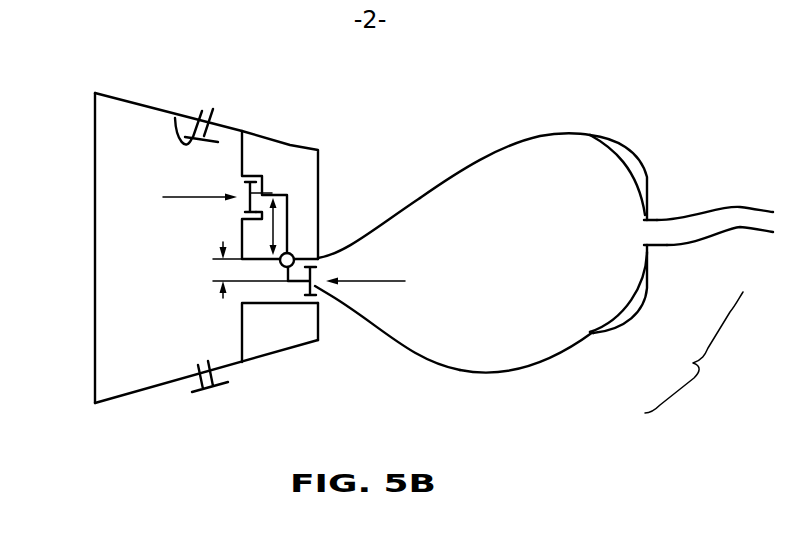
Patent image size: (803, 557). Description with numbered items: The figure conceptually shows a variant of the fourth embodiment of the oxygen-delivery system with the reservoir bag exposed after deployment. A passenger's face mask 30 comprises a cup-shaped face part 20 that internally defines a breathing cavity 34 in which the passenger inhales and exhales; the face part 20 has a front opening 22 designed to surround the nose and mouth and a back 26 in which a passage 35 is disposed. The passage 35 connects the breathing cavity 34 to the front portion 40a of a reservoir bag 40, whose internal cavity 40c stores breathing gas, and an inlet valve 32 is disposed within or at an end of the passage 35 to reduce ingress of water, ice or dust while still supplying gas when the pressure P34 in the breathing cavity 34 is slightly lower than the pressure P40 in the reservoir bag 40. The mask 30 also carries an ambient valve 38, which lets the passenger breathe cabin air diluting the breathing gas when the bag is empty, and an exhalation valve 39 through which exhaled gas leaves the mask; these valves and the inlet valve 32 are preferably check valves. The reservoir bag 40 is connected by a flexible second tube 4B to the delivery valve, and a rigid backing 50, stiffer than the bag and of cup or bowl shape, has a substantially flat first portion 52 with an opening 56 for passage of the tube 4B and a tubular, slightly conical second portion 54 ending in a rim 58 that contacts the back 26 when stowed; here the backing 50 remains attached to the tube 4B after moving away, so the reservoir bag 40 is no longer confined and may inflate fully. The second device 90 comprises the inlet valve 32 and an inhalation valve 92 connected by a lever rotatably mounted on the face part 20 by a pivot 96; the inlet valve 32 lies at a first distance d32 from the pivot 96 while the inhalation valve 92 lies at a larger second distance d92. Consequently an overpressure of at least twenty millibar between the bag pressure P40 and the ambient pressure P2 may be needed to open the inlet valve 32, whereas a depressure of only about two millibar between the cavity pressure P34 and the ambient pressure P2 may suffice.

The face part 20 is at (130, 102).
The front opening 22 is at (95, 350).
The back 26 is at (320, 342).
The face mask 30 is at (128, 427).
The inlet valve 32 is at (328, 298).
The breathing cavity 34 is at (128, 202).
The passage 35 is at (308, 302).
The ambient valve 38 is at (175, 118).
The exhalation valve 39 is at (199, 392).
The reservoir bag 40 is at (483, 128).
The front portion 40a is at (319, 258).
The internal cavity 40c is at (520, 187).
The second tube 4B is at (742, 202).
The backing 50 is at (684, 235).
The first portion 52 is at (650, 280).
The second portion 54 is at (610, 328).
The opening 56 is at (652, 217).
The rim 58 is at (590, 133).
The second device 90 is at (285, 188).
The inhalation valve 92 is at (247, 187).
The pivot 96 is at (292, 254).
The pressure of ambient air P2 is at (268, 193).
The pressure in the breathing cavity P34 is at (194, 186).
The pressure in the reservoir bag P40 is at (366, 270).
The second distance d92 is at (273, 245).
The first distance d32 is at (228, 270).